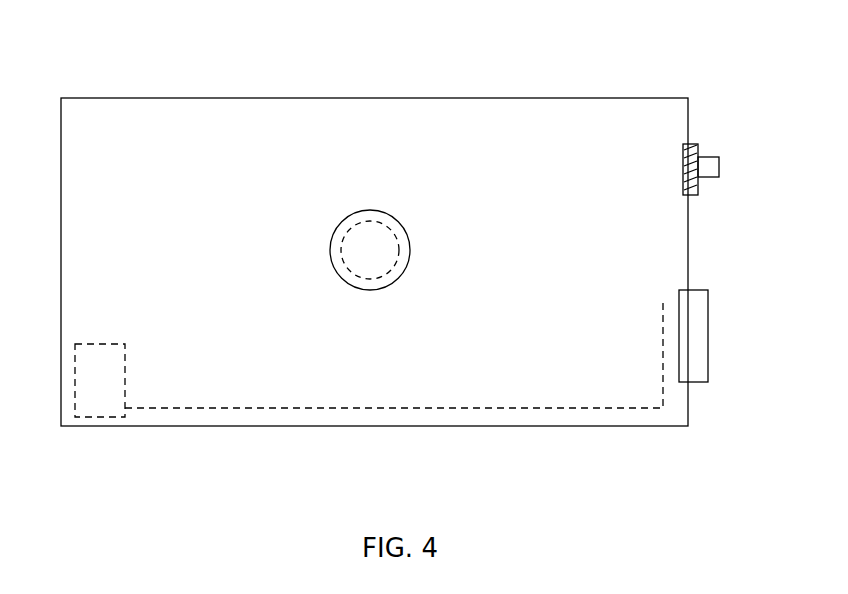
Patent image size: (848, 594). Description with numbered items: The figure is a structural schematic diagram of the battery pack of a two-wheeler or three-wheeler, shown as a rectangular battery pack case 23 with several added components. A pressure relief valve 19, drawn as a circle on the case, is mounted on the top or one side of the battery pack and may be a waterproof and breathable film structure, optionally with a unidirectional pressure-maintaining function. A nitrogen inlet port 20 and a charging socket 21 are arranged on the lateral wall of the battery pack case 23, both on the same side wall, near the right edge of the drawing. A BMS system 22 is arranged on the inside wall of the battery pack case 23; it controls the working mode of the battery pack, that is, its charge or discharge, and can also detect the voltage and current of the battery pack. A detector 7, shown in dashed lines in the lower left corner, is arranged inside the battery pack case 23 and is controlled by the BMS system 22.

The battery pack case 23 is at (87, 96).
The pressure relief valve 19 is at (385, 211).
The nitrogen inlet port 20 is at (705, 156).
The charging socket 21 is at (699, 296).
The BMS system 22 is at (670, 365).
The detector 7 is at (90, 405).